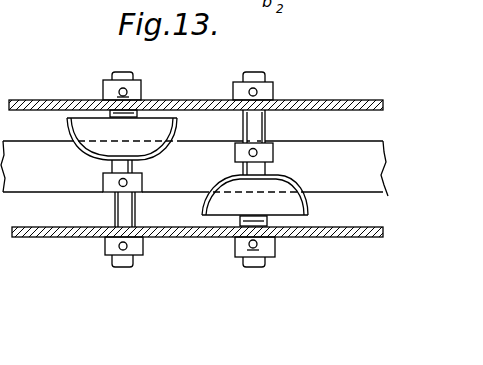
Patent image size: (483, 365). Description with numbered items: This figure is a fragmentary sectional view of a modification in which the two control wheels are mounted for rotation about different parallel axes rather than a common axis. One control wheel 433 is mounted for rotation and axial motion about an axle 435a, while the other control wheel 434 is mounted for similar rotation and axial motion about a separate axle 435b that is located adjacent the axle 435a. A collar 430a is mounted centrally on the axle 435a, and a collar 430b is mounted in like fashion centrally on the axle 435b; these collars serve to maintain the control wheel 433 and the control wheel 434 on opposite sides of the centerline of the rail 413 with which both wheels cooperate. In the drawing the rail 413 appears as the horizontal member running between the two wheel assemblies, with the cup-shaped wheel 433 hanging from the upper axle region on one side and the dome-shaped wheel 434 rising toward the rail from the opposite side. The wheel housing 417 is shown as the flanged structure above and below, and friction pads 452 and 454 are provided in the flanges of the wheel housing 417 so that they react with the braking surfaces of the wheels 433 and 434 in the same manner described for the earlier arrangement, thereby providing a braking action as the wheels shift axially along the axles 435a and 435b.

The rail 413 is at (368, 170).
The wheel housing 417 is at (50, 237).
The control wheel 433 is at (90, 127).
The friction pad 454 is at (143, 99).
The axle 435b is at (253, 123).
The collar 430b is at (273, 155).
The control wheel 434 is at (292, 203).
The friction pad 452 is at (243, 224).
The collar 430a is at (110, 182).
The axle 435a is at (118, 217).